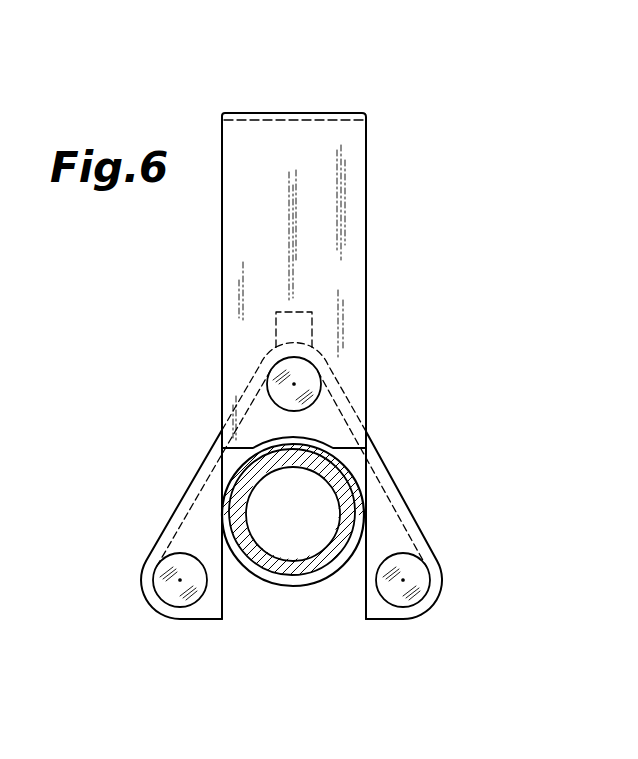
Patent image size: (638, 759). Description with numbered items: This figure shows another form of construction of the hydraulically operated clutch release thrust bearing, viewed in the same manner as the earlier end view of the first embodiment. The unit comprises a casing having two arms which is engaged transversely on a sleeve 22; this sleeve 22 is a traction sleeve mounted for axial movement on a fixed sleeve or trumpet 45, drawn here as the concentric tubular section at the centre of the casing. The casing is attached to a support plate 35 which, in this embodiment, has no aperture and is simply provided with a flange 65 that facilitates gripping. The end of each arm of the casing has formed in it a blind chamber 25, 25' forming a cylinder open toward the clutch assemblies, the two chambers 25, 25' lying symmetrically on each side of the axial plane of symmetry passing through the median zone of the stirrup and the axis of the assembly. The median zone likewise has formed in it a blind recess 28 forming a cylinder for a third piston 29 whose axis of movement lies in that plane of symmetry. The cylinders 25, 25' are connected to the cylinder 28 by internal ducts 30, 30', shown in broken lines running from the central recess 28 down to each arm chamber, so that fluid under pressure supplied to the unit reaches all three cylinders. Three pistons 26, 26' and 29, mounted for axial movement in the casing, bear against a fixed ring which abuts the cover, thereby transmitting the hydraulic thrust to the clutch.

The sleeve 22 is at (306, 580).
The fixed sleeve or trumpet 45 is at (262, 580).
The support plate 35 is at (369, 219).
The flange 65 is at (357, 116).
The blind recess 28 is at (310, 377).
The third piston 29 is at (312, 386).
The internal duct 30 is at (216, 456).
The internal duct 30' is at (382, 457).
The blind chamber 25 is at (169, 553).
The blind chamber 25' is at (436, 567).
The piston 26 is at (162, 622).
The piston 26' is at (419, 626).